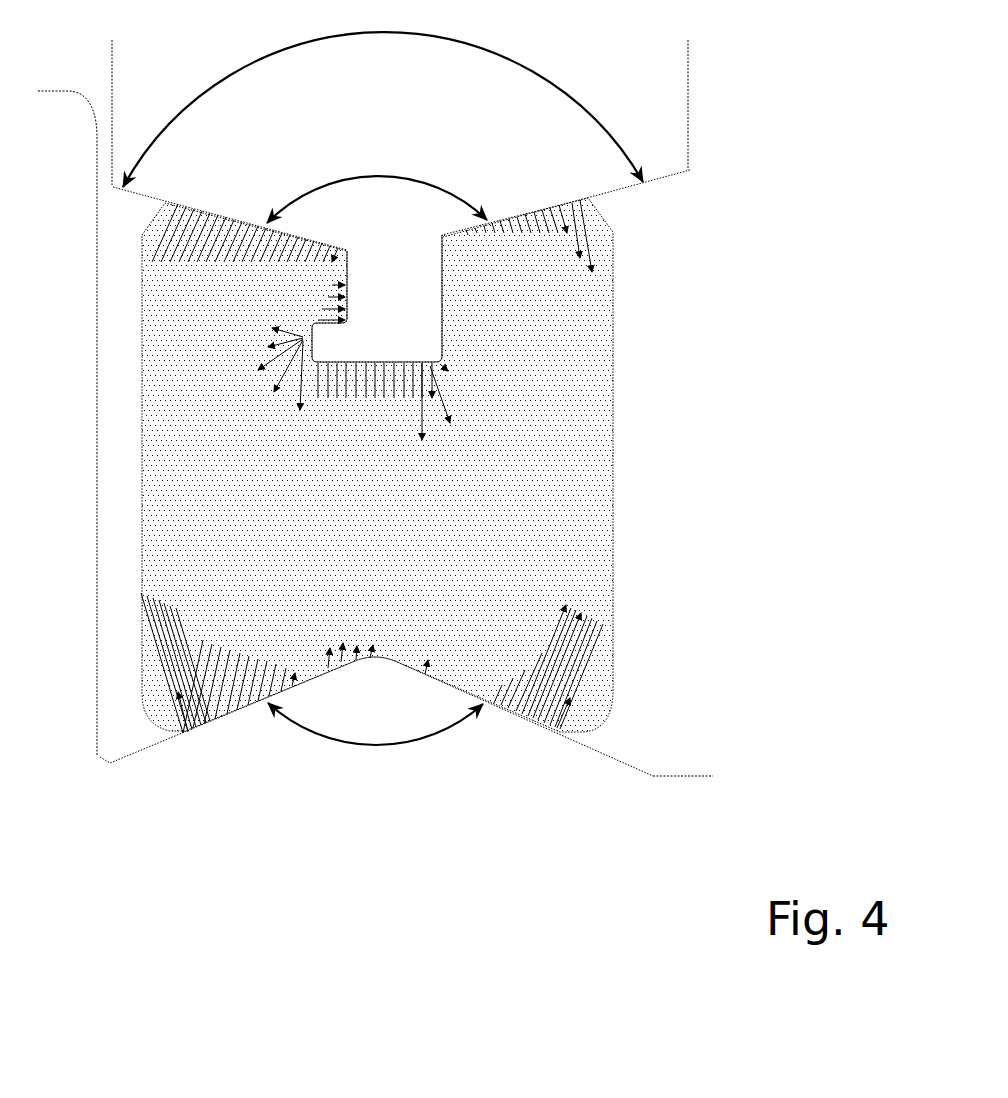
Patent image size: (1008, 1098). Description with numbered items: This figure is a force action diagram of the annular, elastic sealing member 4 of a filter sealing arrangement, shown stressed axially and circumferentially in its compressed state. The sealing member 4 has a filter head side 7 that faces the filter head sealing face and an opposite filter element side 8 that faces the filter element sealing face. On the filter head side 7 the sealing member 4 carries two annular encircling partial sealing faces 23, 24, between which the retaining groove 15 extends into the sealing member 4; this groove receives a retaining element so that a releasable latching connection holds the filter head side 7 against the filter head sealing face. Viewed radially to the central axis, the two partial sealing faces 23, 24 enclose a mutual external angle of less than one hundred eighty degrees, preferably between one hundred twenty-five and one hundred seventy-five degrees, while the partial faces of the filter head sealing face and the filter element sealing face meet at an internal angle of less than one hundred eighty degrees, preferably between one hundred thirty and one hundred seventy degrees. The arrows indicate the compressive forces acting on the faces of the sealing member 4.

The sealing member 4 is at (597, 465).
The filter head side 7 is at (394, 148).
The filter element side 8 is at (382, 777).
The retaining groove 15 is at (382, 357).
The partial sealing face 23 is at (533, 210).
The partial sealing face 24 is at (237, 217).